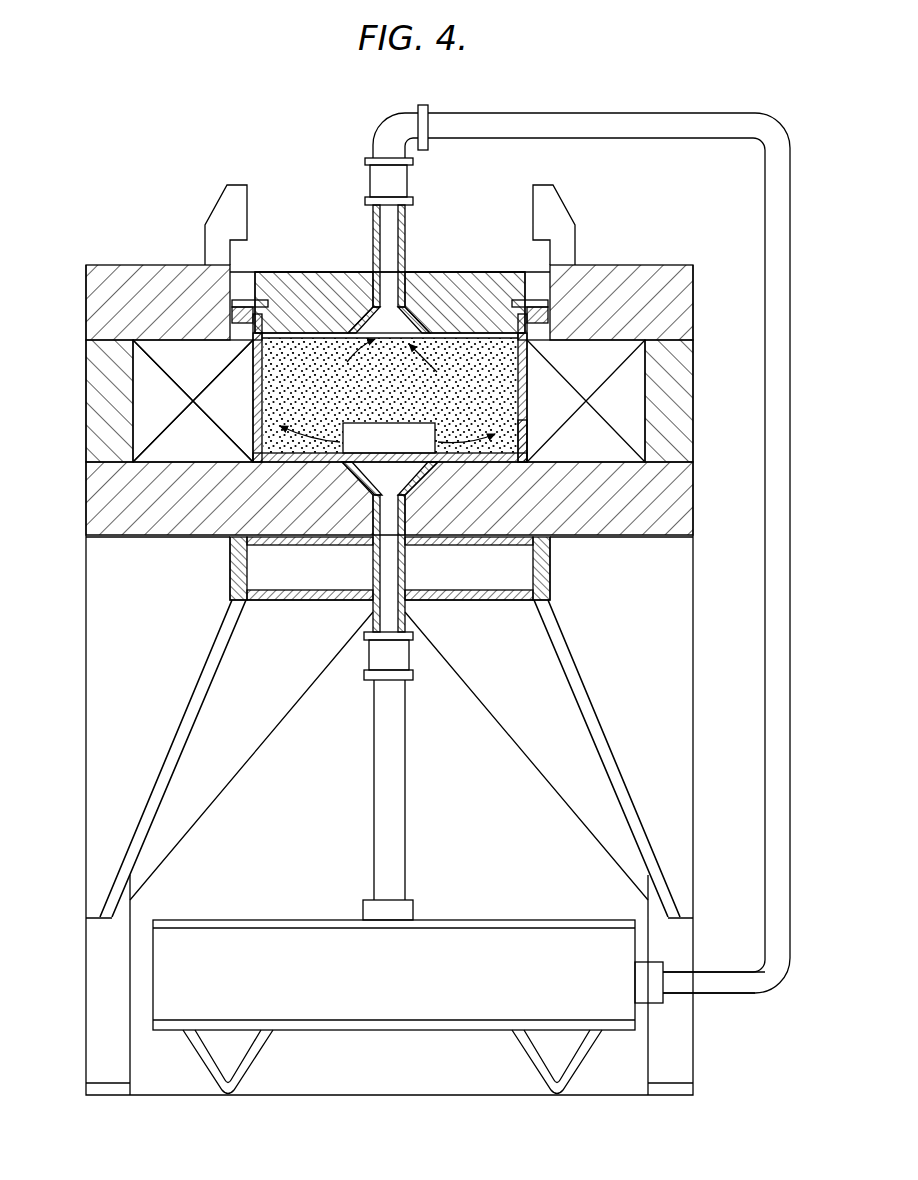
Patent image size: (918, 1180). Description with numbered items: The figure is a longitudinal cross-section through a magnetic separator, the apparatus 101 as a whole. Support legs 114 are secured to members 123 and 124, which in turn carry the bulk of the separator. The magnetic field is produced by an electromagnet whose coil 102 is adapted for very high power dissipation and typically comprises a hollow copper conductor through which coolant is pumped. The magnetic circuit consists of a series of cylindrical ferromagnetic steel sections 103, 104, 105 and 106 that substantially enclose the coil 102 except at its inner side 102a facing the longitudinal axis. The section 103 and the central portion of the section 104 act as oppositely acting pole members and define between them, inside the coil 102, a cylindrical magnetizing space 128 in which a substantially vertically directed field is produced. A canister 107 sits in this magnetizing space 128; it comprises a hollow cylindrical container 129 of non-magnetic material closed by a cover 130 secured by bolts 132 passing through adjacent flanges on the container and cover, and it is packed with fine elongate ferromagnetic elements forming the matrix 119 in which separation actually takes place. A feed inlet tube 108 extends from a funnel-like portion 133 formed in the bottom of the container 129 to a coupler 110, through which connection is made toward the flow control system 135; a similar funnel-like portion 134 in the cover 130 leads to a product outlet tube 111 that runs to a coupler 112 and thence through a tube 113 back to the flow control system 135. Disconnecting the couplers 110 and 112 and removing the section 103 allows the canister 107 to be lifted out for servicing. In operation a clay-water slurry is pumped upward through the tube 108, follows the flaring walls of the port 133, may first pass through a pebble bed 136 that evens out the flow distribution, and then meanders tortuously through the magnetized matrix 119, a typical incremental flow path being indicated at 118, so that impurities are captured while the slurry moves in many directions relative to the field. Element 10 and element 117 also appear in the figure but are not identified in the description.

The shaft 10 is at (406, 825).
The magnetic separator apparatus 101 is at (190, 255).
The coil 102 is at (203, 370).
The inner side of coil 102a is at (256, 380).
The cylindrical section 103 is at (353, 270).
The cylindrical section 104 is at (102, 491).
The cylindrical section 105 is at (97, 385).
The cylindrical section 106 is at (92, 319).
The canister 107 is at (235, 430).
The feed inlet tube 108 is at (372, 520).
The coupler 110 is at (412, 657).
The product outlet tube 111 is at (390, 247).
The coupler 112 is at (408, 192).
The tube 113 is at (708, 140).
The support legs 114 is at (693, 1012).
The distributor insert 117 is at (423, 440).
The incremental flow path 118 is at (507, 452).
The matrix 119 is at (398, 389).
The member 123 is at (580, 808).
The member 124 is at (675, 811).
The magnetizing space 128 is at (520, 372).
The hollow cylindrical container 129 is at (522, 432).
The cover 130 is at (306, 326).
The bolts 132 is at (540, 306).
The funnel-like portion 133 is at (427, 463).
The funnel-like portion 134 is at (418, 320).
The flow control system 135 is at (510, 935).
The pebble bed 136 is at (312, 466).